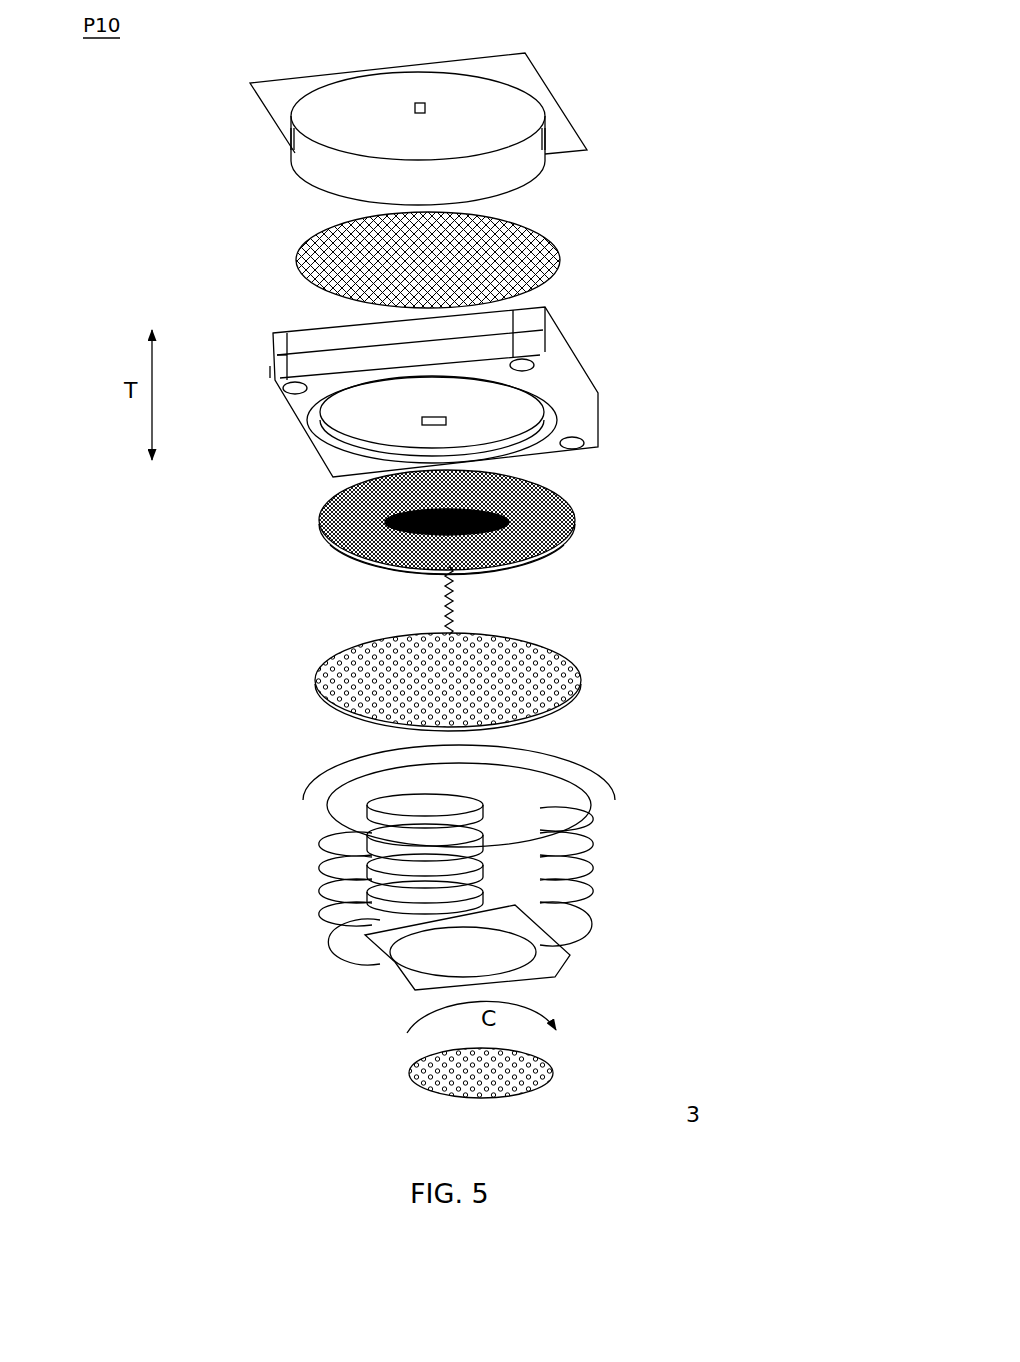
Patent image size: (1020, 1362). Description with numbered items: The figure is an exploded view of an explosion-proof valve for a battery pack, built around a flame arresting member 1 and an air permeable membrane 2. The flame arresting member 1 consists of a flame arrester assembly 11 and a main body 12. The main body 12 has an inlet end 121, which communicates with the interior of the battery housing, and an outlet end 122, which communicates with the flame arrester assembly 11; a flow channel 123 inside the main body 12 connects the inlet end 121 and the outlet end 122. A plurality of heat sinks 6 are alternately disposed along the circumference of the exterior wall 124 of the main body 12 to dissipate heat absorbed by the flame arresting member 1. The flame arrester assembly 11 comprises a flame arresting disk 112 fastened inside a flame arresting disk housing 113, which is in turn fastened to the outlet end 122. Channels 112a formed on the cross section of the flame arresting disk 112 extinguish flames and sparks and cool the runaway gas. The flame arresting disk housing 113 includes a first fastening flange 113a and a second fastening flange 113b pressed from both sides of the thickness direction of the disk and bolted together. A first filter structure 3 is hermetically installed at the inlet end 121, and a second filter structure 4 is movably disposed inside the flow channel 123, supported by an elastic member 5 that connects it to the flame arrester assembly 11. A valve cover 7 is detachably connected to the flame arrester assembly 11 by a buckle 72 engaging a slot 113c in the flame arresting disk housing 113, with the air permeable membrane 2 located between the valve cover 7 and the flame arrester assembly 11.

The flame arresting member 1 is at (760, 622).
The flame arrester assembly 11 is at (466, 436).
The main body 12 is at (466, 867).
The air permeable membrane 2 is at (613, 232).
The first filter structure 3 is at (573, 1067).
The second filter structure 4 is at (619, 655).
The elastic member 5 is at (412, 600).
The heat sink 6 is at (623, 863).
The valve cover 7 is at (435, 121).
The buckle 72 is at (416, 88).
The flame arresting disk 112 is at (493, 529).
The channels 112a is at (577, 527).
The flame arresting disk housing 113 is at (432, 380).
The first fastening flange 113a is at (283, 372).
The second fastening flange 113b is at (277, 344).
The slot 113c is at (433, 416).
The inlet end 121 is at (463, 965).
The outlet end 122 is at (588, 775).
The flow channel 123 is at (403, 985).
The exterior wall 124 is at (336, 810).